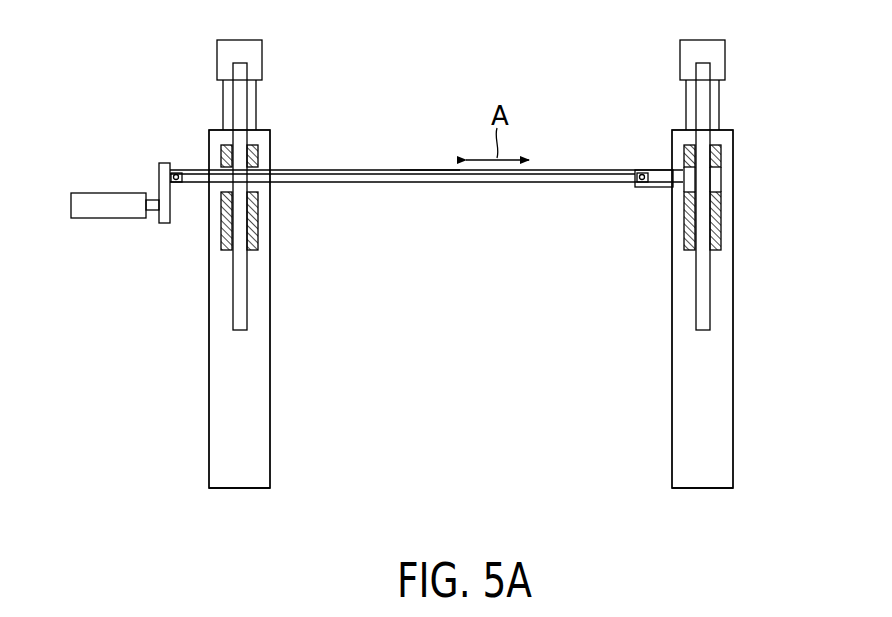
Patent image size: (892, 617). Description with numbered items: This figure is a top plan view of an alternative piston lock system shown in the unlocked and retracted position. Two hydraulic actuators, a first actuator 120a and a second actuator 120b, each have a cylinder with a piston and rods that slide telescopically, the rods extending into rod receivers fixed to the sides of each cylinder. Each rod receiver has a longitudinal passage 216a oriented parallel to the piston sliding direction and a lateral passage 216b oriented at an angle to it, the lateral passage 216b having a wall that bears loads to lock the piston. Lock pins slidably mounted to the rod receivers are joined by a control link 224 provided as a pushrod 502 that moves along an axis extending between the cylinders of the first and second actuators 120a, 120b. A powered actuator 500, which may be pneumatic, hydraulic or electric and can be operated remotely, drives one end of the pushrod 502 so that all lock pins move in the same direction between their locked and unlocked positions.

The first actuator 120a is at (178, 452).
The second actuator 120b is at (642, 452).
The longitudinal passage 216a is at (718, 143).
The lateral passage 216b is at (718, 178).
The control link 224 is at (420, 145).
The powered actuator 500 is at (113, 203).
The pushrod 502 is at (450, 175).